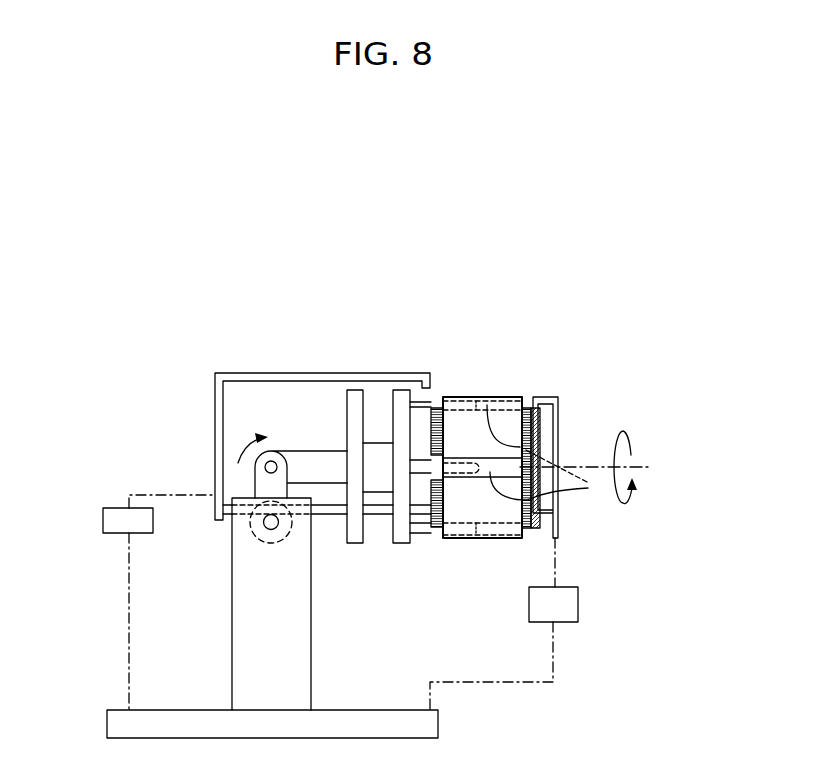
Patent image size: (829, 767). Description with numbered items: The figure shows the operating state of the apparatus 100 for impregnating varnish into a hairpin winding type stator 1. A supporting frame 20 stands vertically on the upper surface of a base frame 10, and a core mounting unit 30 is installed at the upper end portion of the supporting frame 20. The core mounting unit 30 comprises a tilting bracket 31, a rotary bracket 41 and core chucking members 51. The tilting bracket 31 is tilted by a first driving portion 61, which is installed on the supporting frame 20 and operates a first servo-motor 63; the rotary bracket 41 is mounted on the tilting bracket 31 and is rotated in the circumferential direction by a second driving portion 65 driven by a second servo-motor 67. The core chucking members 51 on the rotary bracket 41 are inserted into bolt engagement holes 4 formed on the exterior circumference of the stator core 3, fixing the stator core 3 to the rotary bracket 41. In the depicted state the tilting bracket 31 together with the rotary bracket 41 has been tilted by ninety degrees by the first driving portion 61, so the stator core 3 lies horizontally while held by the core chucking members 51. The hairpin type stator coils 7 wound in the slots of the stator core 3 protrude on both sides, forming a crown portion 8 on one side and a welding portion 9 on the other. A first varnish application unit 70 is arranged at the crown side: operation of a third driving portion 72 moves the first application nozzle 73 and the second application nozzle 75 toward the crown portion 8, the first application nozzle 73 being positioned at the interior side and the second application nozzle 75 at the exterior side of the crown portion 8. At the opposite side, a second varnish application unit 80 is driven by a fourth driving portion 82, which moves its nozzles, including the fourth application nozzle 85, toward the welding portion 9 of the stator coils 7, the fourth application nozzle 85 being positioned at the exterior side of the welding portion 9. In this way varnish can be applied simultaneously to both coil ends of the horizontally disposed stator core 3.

The apparatus 100 is at (222, 258).
The base frame 10 is at (107, 722).
The supporting frame 20 is at (232, 628).
The core mounting unit 30 is at (380, 469).
The tilting bracket 31 is at (355, 390).
The rotary bracket 41 is at (400, 390).
The second driving portion 65 is at (382, 432).
The second servo-motor 67 is at (373, 470).
The first driving portion 61 is at (269, 495).
The first servo-motor 63 is at (250, 540).
The second varnish application unit 80 is at (188, 393).
The fourth driving portion 82 is at (103, 520).
The fourth application nozzle 85 is at (436, 408).
The core chucking members 51 is at (477, 401).
The stator 1 is at (514, 481).
The stator core 3 is at (502, 423).
The bolt engagement holes 4 is at (544, 453).
The stator coils 7 is at (489, 538).
The crown portion 8 is at (538, 535).
The welding portion 9 is at (438, 488).
The first varnish application unit 70 is at (539, 529).
The second application nozzle 75 is at (547, 397).
The first application nozzle 73 is at (557, 539).
The third driving portion 72 is at (578, 604).